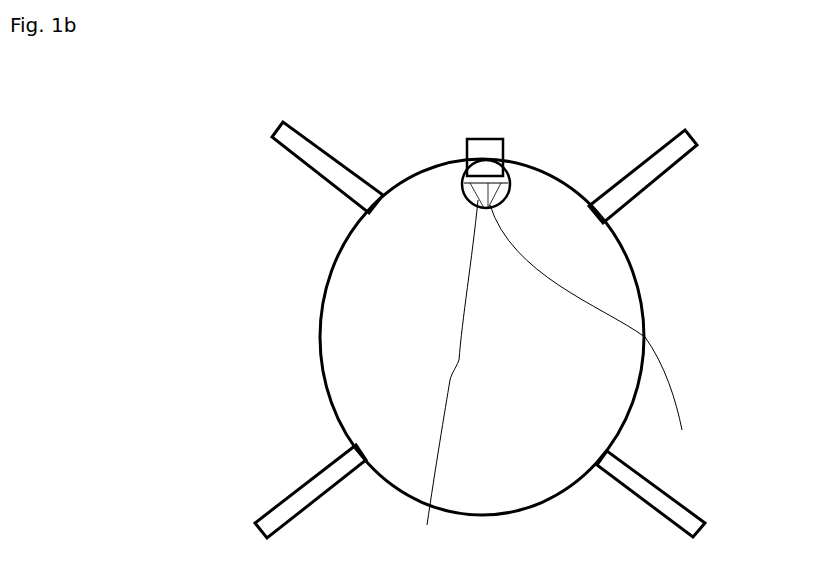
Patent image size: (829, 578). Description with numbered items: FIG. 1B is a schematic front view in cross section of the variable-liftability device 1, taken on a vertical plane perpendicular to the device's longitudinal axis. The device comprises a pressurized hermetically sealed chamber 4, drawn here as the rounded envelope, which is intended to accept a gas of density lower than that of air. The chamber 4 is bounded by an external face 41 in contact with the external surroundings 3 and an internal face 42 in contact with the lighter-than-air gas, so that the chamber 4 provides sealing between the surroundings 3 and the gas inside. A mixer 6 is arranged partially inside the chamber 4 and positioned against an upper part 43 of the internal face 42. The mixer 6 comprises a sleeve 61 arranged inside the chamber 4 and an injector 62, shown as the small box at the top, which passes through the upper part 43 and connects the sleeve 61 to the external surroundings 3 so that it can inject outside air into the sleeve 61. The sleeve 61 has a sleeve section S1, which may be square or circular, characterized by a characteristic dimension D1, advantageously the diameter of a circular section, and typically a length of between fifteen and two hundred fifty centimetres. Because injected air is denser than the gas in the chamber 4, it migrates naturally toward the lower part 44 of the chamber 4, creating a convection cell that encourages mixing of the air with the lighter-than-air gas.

The variable-liftability device 1 is at (435, 315).
The external surroundings 3 is at (712, 375).
The hermetically sealed chamber 4 is at (322, 272).
The mixer 6 is at (503, 148).
The external face 41 is at (397, 497).
The internal face 42 is at (563, 483).
The upper part 43 is at (438, 190).
The lower part 44 is at (422, 476).
The sleeve 61 is at (515, 189).
The injector 62 is at (508, 149).
The sleeve section S1 is at (450, 376).
The characteristic dimension D1 is at (586, 330).